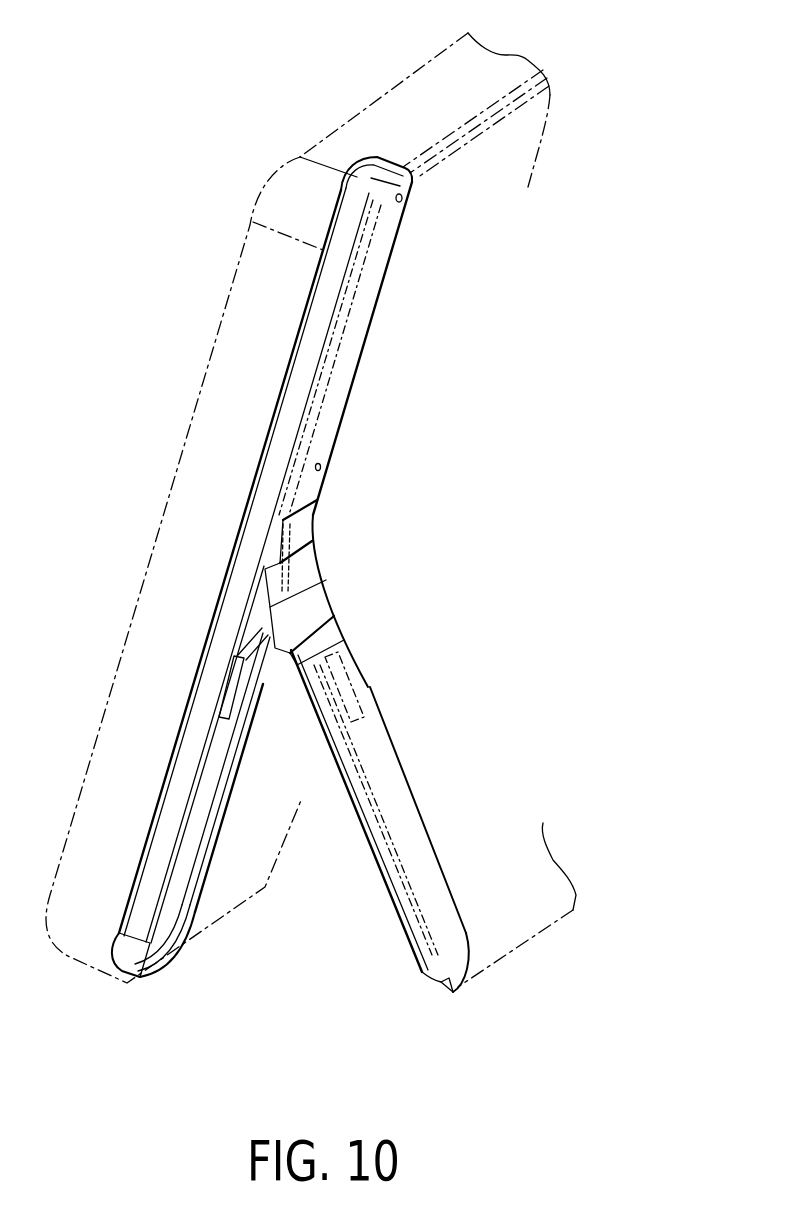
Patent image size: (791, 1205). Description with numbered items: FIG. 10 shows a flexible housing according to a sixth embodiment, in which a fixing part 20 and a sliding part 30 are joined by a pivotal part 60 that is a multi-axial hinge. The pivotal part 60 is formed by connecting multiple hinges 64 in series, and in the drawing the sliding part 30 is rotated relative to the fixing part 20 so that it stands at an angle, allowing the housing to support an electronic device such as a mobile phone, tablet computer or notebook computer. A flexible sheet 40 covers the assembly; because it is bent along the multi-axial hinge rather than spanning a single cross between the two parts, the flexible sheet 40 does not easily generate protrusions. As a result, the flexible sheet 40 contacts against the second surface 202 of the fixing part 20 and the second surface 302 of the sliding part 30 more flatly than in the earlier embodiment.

The fixing part 20 is at (357, 333).
The second surface 202 is at (303, 450).
The sliding part 30 is at (387, 832).
The second surface 302 is at (403, 912).
The flexible sheet 40 is at (553, 862).
The pivotal part 60 is at (386, 593).
The hinges 64 is at (310, 525).